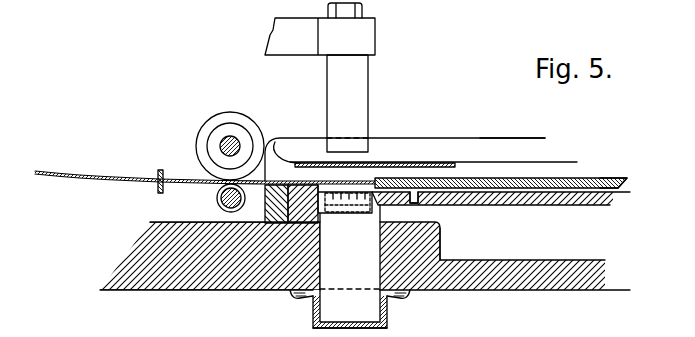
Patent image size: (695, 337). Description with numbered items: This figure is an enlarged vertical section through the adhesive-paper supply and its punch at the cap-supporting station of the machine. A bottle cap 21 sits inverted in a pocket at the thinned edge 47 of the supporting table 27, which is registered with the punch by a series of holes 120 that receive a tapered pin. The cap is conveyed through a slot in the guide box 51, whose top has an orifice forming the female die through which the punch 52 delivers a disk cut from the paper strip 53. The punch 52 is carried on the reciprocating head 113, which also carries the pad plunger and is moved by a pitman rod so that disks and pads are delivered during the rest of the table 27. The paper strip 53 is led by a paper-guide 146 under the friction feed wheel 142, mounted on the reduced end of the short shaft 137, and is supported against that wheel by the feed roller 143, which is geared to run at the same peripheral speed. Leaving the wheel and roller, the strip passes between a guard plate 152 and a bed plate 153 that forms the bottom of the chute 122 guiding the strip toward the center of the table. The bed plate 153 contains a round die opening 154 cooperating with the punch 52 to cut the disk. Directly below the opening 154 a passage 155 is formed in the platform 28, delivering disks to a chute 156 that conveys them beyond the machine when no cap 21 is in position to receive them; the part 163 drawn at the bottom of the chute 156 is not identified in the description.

The bottle cap 21 is at (352, 215).
The supporting table 27 is at (560, 200).
The platform 28 is at (562, 277).
The thinned edge 47 is at (375, 212).
The guide box 51 is at (318, 226).
The punch 52 is at (359, 112).
The paper strip 53 is at (90, 181).
The reciprocating head 113 is at (365, 40).
The holes 120 is at (420, 205).
The chute 122 is at (548, 153).
The short shaft 137 is at (222, 146).
The friction feed wheel 142 is at (226, 112).
The feed roller 143 is at (217, 198).
The paper-guide 146 is at (157, 191).
The guard plate 152 is at (425, 166).
The bed plate 153 is at (625, 184).
The die opening 154 is at (348, 183).
The passage 155 is at (443, 245).
The chute 156 is at (333, 308).
The cup bottom 163 is at (350, 330).